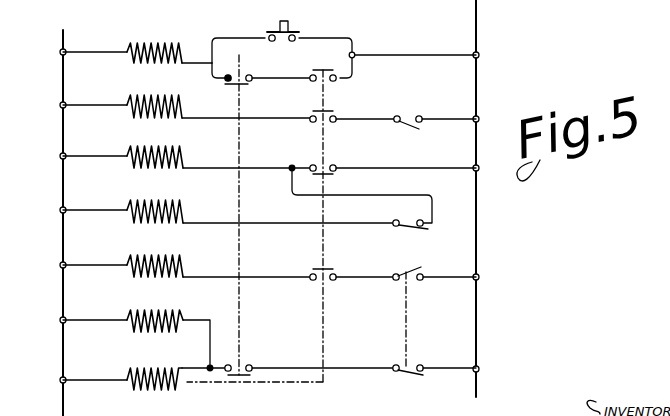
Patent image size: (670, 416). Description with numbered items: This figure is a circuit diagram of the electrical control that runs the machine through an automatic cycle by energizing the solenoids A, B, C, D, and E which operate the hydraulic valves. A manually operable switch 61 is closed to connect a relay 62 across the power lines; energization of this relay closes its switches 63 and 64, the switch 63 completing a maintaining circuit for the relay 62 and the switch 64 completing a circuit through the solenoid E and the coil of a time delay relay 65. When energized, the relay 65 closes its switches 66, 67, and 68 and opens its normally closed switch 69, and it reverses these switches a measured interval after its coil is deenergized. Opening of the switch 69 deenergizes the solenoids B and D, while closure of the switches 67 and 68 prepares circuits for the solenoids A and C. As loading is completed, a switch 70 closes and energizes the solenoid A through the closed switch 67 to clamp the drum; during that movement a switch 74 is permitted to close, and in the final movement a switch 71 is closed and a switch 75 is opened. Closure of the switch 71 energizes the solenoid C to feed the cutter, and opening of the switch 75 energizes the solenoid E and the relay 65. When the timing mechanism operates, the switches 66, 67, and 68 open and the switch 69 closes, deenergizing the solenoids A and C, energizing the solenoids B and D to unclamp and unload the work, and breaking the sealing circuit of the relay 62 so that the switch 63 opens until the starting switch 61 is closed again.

The manually operable switch 61 is at (293, 27).
The relay 62 is at (148, 44).
The switch 63 is at (243, 75).
The switch 64 is at (246, 363).
The relay 65 is at (140, 366).
The switch 66 is at (337, 86).
The switch 67 is at (320, 124).
The switch 68 is at (318, 283).
The normally closed switch 69 is at (329, 164).
The switch 70 is at (405, 114).
The switch 71 is at (420, 274).
The switch 74 is at (401, 234).
The switch 75 is at (414, 364).
The solenoid A is at (140, 98).
The solenoid B is at (142, 150).
The solenoid C is at (140, 258).
The solenoid D is at (144, 204).
The solenoid E is at (140, 312).